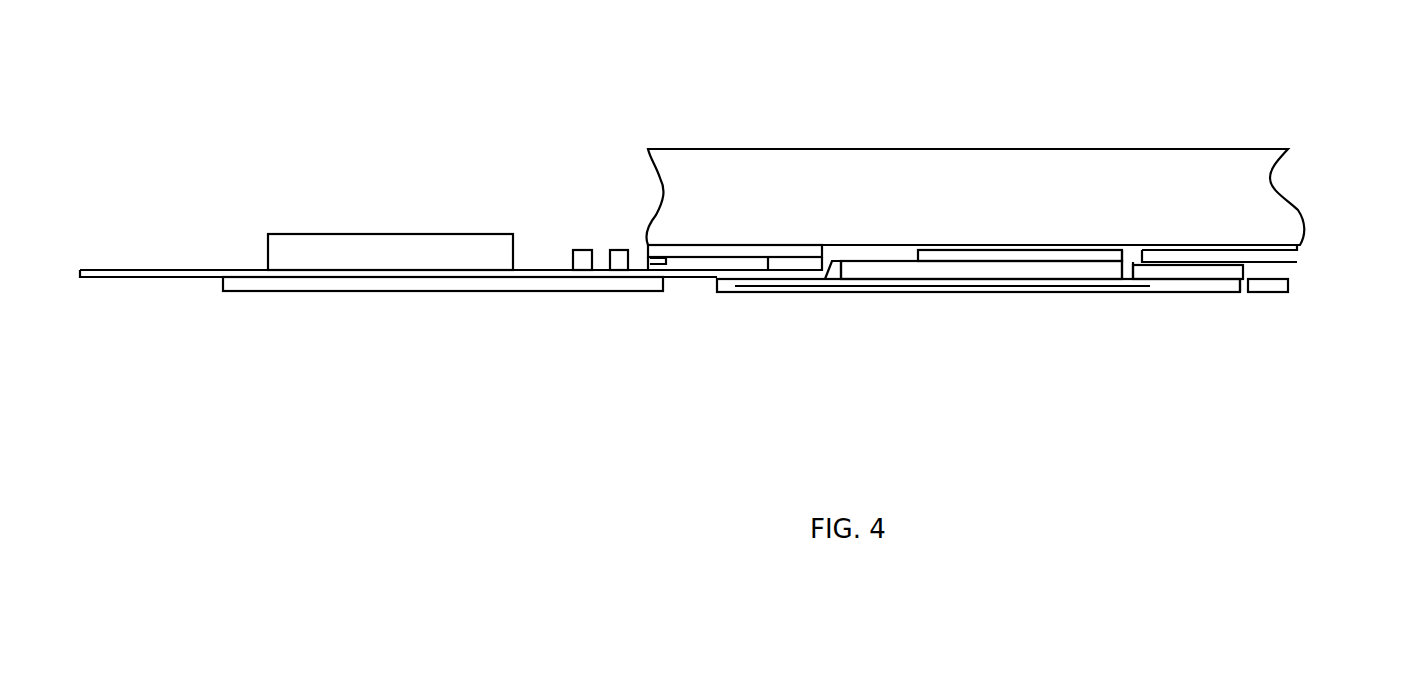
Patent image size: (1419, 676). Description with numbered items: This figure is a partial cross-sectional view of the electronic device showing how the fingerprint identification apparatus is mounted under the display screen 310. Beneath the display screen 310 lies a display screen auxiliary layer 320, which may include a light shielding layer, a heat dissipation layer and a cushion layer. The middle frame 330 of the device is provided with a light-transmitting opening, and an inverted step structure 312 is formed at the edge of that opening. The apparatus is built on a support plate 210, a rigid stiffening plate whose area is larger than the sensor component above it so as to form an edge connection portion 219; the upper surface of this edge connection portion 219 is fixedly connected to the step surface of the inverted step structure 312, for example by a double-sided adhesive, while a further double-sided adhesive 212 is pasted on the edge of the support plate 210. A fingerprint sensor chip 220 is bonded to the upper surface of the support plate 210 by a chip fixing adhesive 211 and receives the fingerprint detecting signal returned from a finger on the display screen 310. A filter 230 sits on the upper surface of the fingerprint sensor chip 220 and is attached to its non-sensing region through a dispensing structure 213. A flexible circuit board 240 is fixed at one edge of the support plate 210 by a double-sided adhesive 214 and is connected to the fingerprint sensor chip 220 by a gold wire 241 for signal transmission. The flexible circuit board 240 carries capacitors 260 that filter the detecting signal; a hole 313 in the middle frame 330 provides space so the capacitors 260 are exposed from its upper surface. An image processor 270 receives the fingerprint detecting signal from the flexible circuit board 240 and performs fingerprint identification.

The support plate 210 is at (747, 292).
The chip fixing adhesive 211 is at (917, 292).
The double-sided adhesive 212 is at (1220, 278).
The dispensing structure 213 is at (1077, 256).
The double-sided adhesive 214 is at (783, 292).
The edge connection portion 219 is at (1183, 293).
The fingerprint sensor chip 220 is at (1040, 279).
The filter 230 is at (952, 253).
The flexible circuit board 240 is at (805, 292).
The gold wire 241 is at (833, 292).
The capacitors 260 is at (580, 249).
The image processor 270 is at (327, 234).
The display screen 310 is at (780, 163).
The inverted step structure 312 is at (1240, 293).
The hole 313 is at (598, 244).
The display screen auxiliary layer 320 is at (675, 257).
The middle frame 330 is at (666, 262).